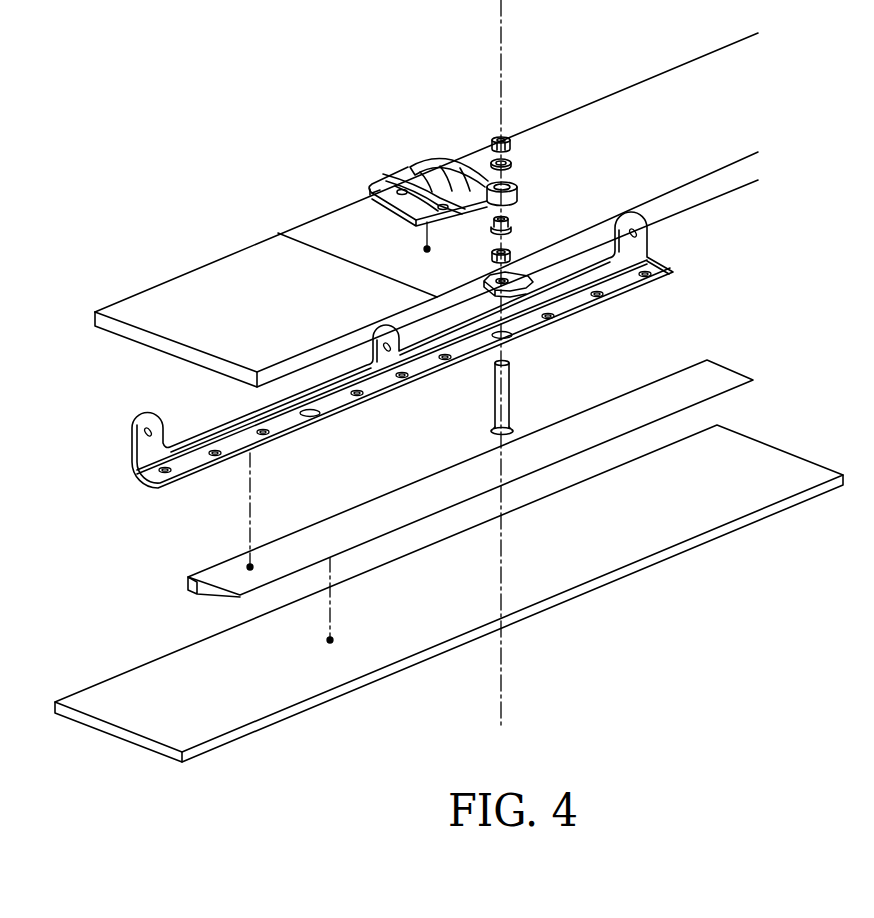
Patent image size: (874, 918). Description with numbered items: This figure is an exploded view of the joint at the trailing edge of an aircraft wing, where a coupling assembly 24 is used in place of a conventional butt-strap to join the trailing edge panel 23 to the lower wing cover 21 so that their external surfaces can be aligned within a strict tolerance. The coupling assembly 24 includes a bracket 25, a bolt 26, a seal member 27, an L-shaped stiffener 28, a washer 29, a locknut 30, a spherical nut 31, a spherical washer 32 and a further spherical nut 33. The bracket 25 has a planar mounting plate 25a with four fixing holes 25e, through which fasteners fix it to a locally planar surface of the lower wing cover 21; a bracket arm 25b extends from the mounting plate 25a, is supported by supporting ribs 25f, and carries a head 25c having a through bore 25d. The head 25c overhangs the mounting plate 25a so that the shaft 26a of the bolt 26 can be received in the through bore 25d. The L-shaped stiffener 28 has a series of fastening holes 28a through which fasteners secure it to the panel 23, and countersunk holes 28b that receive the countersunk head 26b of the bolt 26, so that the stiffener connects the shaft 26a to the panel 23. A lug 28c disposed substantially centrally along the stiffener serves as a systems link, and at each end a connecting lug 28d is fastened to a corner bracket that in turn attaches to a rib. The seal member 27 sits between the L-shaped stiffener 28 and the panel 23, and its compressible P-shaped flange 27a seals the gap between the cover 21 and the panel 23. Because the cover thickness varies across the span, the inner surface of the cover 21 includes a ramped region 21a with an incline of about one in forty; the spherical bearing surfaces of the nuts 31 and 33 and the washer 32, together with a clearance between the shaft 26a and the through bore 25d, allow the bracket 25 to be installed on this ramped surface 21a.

The lower wing cover 21 is at (150, 298).
The ramped region 21a is at (324, 223).
The trailing edge panel 23 is at (795, 487).
The coupling assembly 24 is at (362, 142).
The bracket 25 is at (443, 150).
The mounting plate 25a is at (428, 218).
The bracket arm 25b is at (432, 160).
The head 25c is at (520, 196).
The through bore 25d is at (514, 180).
The fixing holes 25e is at (400, 190).
The supporting ribs 25f is at (410, 201).
The bolt 26 is at (510, 394).
The shaft 26a is at (509, 374).
The countersunk head 26b is at (493, 430).
The seal member 27 is at (720, 373).
The P-shaped flange 27a is at (187, 589).
The L-shaped stiffener 28 is at (232, 423).
The fastening holes 28a is at (162, 475).
The countersunk holes 28b is at (316, 415).
The lug 28c is at (377, 344).
The connecting lug 28d is at (147, 432).
The washer 29 is at (487, 277).
The locknut 30 is at (512, 253).
The spherical nut 31 is at (512, 224).
The spherical washer 32 is at (511, 160).
The spherical nut 33 is at (507, 134).